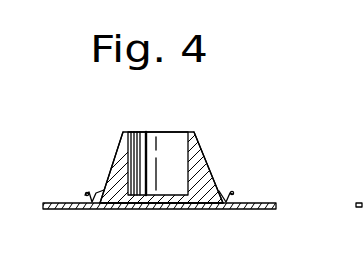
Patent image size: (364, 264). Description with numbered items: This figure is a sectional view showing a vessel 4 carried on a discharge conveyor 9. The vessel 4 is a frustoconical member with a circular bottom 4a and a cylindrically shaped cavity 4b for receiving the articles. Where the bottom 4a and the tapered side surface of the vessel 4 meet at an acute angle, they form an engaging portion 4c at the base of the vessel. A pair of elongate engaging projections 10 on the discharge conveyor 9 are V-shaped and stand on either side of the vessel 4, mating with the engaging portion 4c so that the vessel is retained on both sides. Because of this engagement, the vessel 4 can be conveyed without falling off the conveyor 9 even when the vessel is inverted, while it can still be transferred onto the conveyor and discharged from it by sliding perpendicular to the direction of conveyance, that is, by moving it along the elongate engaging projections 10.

The vessel 4 is at (208, 140).
The circular bottom 4a is at (167, 201).
The cylindrically shaped cavity 4b is at (167, 142).
The engaging portion 4c is at (110, 181).
The discharge conveyor 9 is at (55, 210).
The elongate engaging projections 10 is at (87, 195).